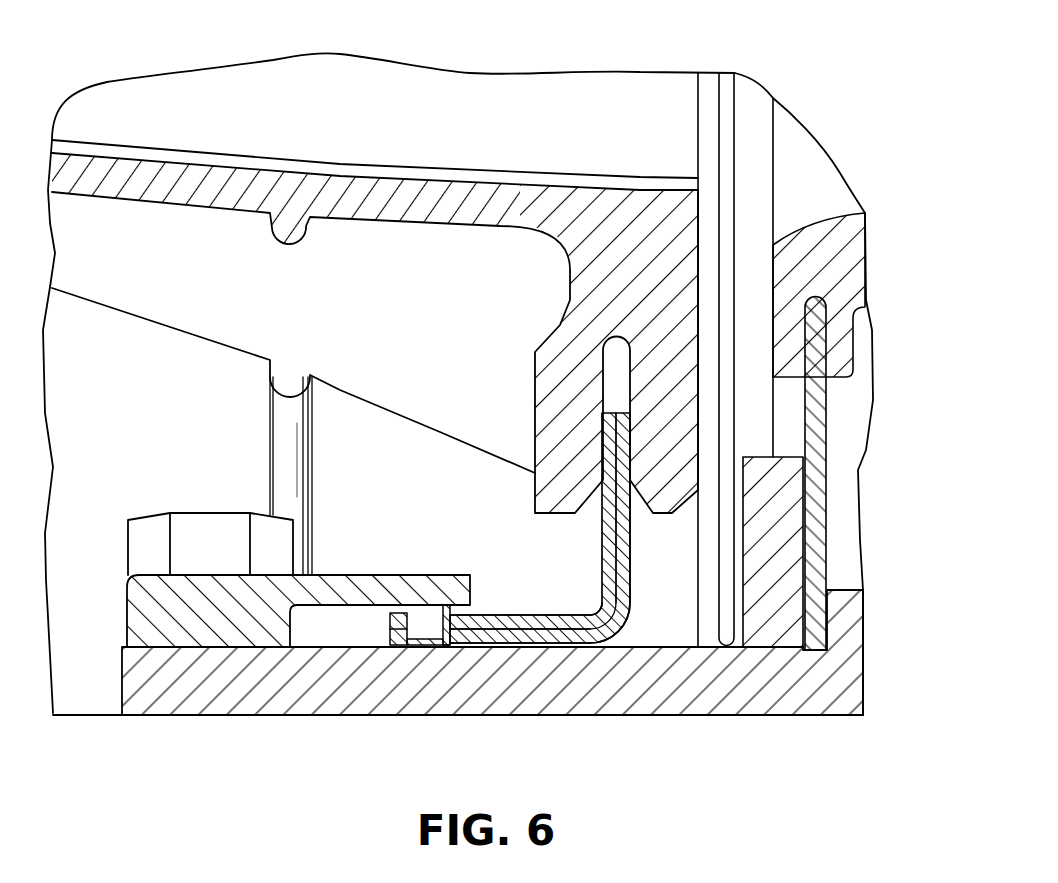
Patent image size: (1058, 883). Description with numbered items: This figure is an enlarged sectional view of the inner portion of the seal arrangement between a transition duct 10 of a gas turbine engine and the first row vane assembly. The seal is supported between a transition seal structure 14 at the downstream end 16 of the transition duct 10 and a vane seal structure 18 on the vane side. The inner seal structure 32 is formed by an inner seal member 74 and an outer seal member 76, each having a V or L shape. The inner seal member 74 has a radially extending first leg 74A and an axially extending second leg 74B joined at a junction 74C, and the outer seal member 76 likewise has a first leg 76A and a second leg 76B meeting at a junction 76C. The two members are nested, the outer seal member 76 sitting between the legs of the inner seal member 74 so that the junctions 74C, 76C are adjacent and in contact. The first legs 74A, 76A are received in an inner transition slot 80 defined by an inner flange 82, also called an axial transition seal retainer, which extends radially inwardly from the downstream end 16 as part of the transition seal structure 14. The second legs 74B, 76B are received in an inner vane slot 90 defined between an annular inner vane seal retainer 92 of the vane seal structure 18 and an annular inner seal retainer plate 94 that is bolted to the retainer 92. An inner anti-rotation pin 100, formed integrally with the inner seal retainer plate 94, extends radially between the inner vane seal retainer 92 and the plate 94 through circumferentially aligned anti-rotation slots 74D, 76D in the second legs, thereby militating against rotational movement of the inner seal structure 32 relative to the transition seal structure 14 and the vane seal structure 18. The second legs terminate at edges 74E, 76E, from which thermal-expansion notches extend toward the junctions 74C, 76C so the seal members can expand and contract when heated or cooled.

The transition duct 10 is at (157, 117).
The transition seal structure 14 is at (660, 238).
The downstream end 16 is at (554, 213).
The vane seal structure 18 is at (782, 720).
The inner seal structure 32 is at (530, 660).
The inner seal member 74 is at (510, 650).
The first leg of inner seal member 74A is at (633, 530).
The second leg of inner seal member 74B is at (483, 650).
The junction of inner seal member 74C is at (618, 637).
The anti-rotation slot of inner seal member 74D is at (435, 648).
The edge of inner seal member second leg 74E is at (373, 648).
The outer seal member 76 is at (603, 458).
The first leg of outer seal member 76A is at (607, 473).
The second leg of outer seal member 76B is at (490, 613).
The junction of outer seal member 76C is at (597, 607).
The anti-rotation slot of outer seal member 76D is at (445, 605).
The edge of outer seal member second leg 76E is at (392, 612).
The inner transition slot 80 is at (620, 377).
The inner flange 82 is at (563, 342).
The inner vane slot 90 is at (374, 620).
The annular inner vane seal retainer 92 is at (257, 688).
The annular inner seal retainer plate 94 is at (333, 573).
The inner anti-rotation pin 100 is at (423, 627).